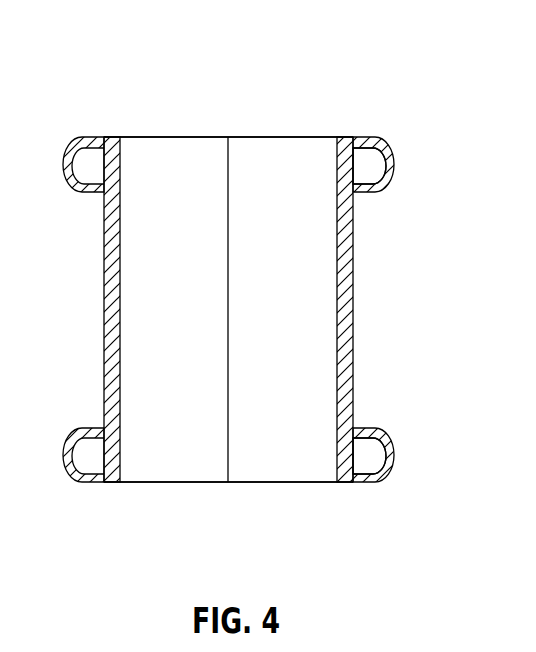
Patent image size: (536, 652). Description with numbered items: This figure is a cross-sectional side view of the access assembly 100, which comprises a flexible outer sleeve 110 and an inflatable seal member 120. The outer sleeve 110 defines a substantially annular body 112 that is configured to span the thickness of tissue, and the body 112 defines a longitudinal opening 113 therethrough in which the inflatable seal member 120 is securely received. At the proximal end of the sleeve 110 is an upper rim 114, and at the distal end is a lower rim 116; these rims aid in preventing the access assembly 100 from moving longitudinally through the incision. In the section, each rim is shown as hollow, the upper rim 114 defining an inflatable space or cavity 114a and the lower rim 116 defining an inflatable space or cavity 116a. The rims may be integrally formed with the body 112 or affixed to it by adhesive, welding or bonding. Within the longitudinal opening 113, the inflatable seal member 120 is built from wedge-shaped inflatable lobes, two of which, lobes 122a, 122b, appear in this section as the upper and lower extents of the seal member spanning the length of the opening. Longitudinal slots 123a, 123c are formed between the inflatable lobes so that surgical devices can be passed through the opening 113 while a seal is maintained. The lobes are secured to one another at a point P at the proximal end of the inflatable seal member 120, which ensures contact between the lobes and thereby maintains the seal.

The access assembly 100 is at (330, 65).
The flexible outer sleeve 110 is at (97, 290).
The annular body 112 is at (104, 337).
The longitudinal opening 113 is at (122, 228).
The upper rim 114 is at (363, 137).
The inflatable cavity of upper rim 114a is at (385, 167).
The lower rim 116 is at (368, 482).
The inflatable cavity of lower rim 116a is at (380, 458).
The inflatable seal member 120 is at (147, 108).
The inflatable lobe 122a is at (267, 137).
The inflatable lobe 122b is at (182, 482).
The longitudinal slot 123a is at (205, 324).
The longitudinal slot 123c is at (307, 324).
The point P is at (228, 137).